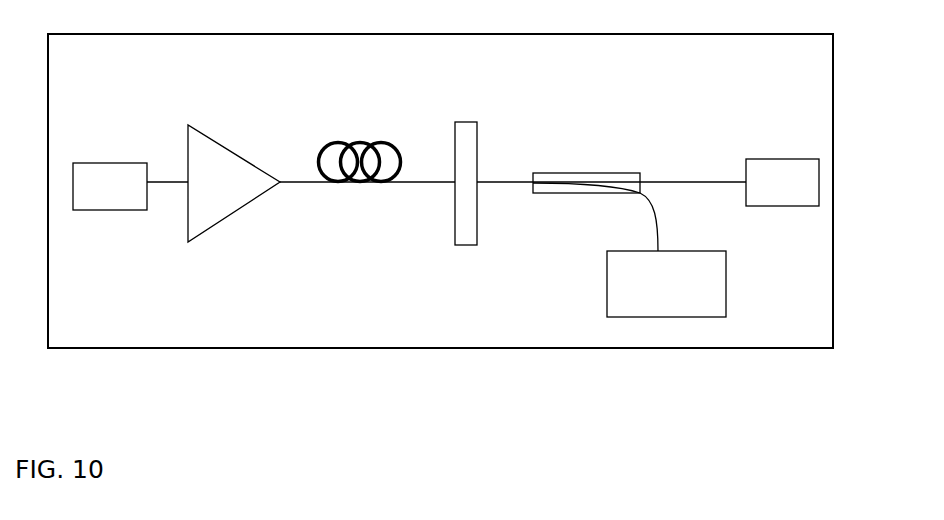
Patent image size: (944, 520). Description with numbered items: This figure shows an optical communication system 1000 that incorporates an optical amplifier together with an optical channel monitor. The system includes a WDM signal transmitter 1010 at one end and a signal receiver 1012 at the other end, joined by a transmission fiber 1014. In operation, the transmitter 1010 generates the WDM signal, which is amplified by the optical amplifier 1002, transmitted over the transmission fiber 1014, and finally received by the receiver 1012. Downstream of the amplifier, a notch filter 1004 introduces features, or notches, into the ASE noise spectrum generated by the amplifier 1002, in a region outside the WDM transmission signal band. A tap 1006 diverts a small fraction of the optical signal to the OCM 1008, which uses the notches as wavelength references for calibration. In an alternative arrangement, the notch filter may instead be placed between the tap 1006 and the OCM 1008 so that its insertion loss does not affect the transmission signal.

The optical communication system 1000 is at (833, 233).
The WDM signal transmitter 1010 is at (88, 163).
The optical amplifier 1002 is at (235, 148).
The transmission fiber 1014 is at (368, 141).
The notch filter 1004 is at (470, 122).
The tap 1006 is at (580, 172).
The OCM 1008 is at (726, 263).
The signal receiver 1012 is at (753, 159).